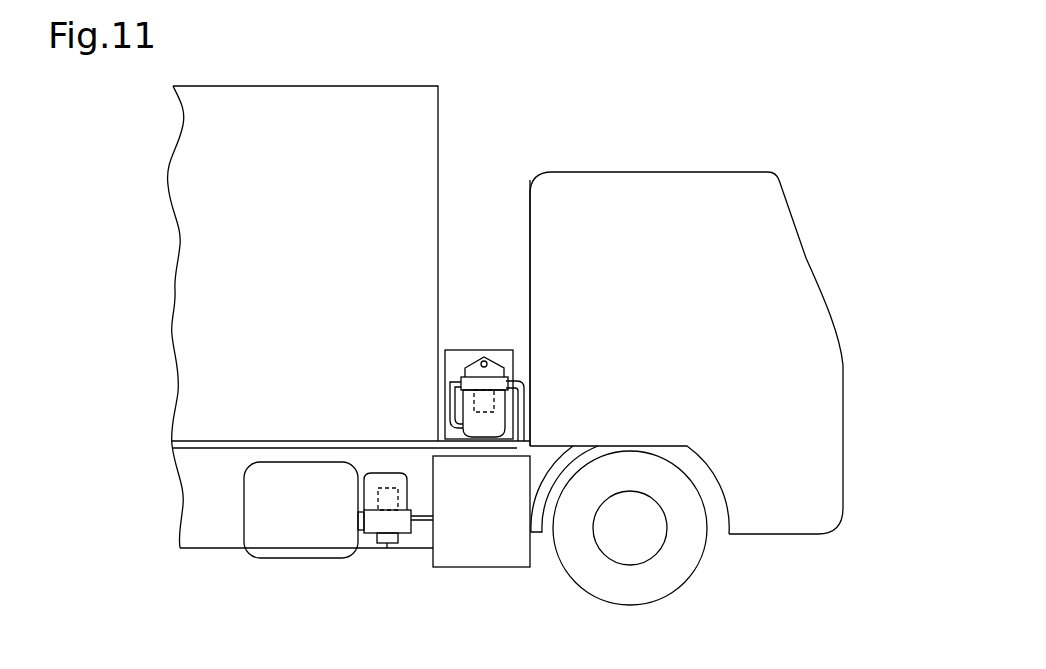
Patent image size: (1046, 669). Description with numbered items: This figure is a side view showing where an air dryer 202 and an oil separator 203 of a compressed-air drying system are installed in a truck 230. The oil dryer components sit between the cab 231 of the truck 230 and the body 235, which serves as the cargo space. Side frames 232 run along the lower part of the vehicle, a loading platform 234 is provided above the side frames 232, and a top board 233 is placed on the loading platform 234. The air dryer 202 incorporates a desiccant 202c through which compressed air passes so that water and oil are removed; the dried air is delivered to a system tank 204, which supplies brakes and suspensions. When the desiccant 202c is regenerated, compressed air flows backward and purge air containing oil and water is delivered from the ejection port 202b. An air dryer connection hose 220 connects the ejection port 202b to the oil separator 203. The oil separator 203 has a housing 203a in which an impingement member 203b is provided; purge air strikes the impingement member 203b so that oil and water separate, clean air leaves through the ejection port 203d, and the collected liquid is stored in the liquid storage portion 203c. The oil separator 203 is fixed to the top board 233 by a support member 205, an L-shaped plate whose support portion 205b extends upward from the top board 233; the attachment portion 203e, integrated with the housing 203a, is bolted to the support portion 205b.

The body 235 is at (439, 127).
The truck 230 is at (647, 172).
The cab 231 is at (530, 206).
The loading platform 234 is at (481, 294).
The top board 233 is at (285, 441).
The side frames 232 is at (208, 548).
The system tank 204 is at (300, 558).
The air dryer 202 is at (427, 540).
The ejection port 202b is at (387, 548).
The desiccant 202c is at (399, 500).
The air dryer connection hose 220 is at (433, 527).
The support member 205 is at (457, 350).
The support portion 205b is at (514, 360).
The oil separator 203 is at (492, 373).
The housing 203a is at (505, 414).
The impingement member 203b is at (495, 395).
The liquid storage portion 203c is at (452, 426).
The ejection port 203d is at (452, 388).
The attachment portion 203e is at (485, 358).